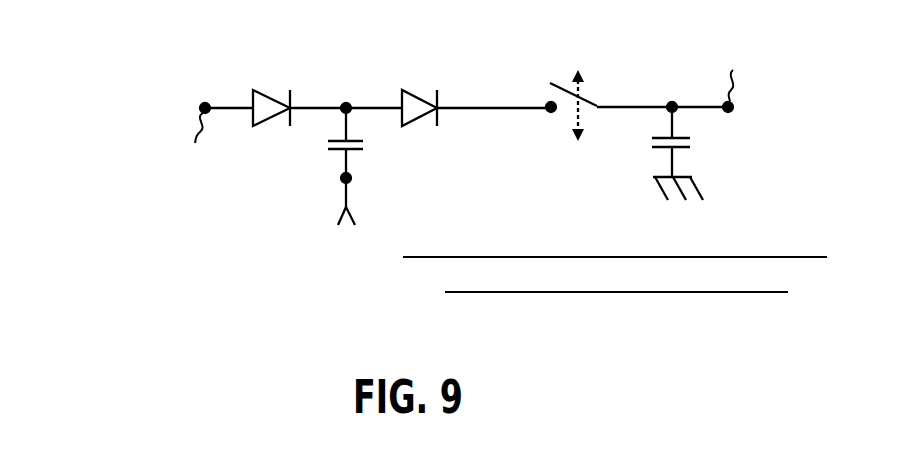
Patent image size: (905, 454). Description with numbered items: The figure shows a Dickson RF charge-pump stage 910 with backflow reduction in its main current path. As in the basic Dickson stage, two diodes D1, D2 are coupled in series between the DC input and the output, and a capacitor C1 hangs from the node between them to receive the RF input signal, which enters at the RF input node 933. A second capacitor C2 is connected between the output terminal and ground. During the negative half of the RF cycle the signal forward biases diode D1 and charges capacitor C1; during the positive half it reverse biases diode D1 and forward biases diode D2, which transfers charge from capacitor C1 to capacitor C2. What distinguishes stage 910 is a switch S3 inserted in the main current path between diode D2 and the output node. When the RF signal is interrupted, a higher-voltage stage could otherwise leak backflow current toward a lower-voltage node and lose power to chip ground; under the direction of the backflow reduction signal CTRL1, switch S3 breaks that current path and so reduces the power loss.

The Dickson RF charge-pump stage with backflow reduction 910 is at (108, 46).
The RF input node (RF A.IN) 933 is at (341, 180).
The diode D1 is at (271, 91).
The diode D2 is at (419, 91).
The capacitor C1 is at (363, 143).
The capacitor C2 is at (687, 153).
The switch S3 is at (589, 92).
The backflow reduction signal CTRL1 is at (576, 126).